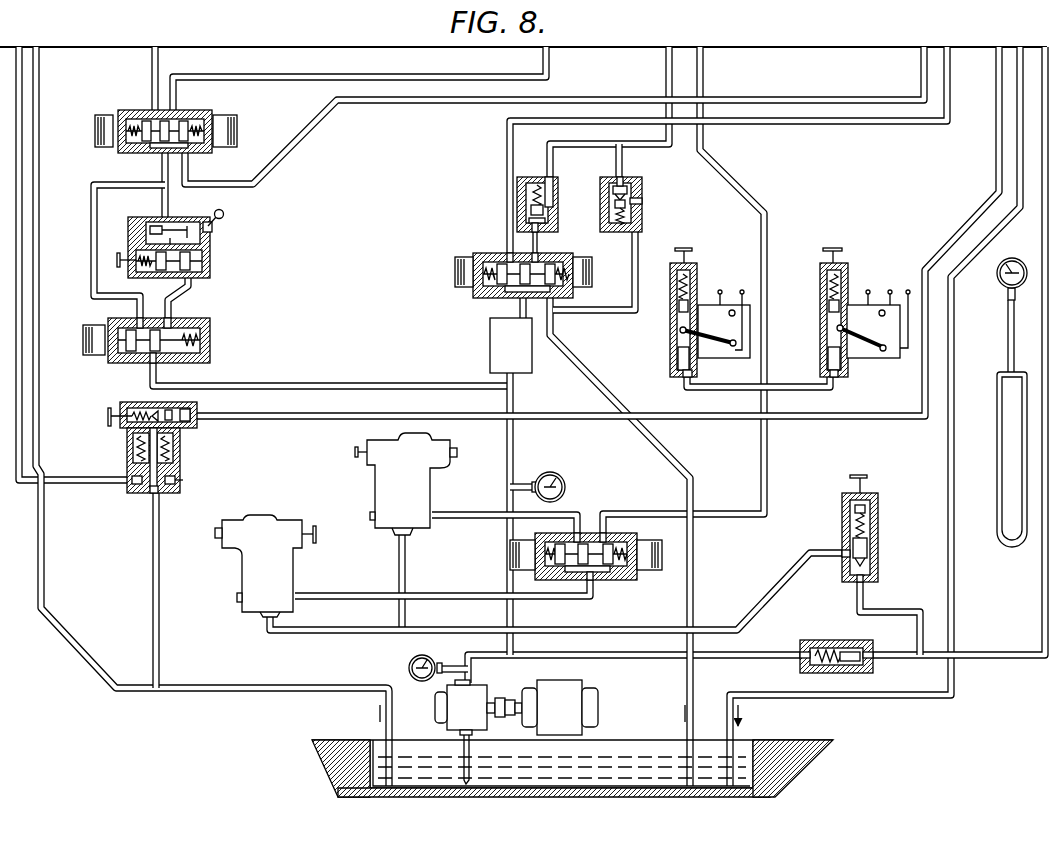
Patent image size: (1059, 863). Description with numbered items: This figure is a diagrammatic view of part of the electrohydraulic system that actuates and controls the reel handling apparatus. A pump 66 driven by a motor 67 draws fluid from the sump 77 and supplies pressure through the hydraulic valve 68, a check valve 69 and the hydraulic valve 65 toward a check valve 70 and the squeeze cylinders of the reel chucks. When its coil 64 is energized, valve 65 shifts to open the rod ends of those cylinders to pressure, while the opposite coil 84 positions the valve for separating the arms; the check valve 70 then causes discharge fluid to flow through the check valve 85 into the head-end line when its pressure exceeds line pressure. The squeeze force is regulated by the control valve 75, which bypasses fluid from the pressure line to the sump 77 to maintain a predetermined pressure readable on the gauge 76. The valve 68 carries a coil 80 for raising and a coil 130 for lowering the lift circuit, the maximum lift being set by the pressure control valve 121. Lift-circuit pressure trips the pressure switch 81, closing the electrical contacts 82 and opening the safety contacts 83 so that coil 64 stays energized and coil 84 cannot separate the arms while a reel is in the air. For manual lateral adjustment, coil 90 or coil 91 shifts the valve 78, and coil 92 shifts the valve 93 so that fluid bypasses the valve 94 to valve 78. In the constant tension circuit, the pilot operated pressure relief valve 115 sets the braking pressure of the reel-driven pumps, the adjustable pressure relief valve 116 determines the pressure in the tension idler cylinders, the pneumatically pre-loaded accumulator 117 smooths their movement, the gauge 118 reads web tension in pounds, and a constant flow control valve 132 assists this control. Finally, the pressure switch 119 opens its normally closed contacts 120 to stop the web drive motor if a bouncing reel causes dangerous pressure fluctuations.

The coil 64 is at (592, 280).
The hydraulic valve 65 is at (490, 251).
The pump 66 is at (476, 665).
The motor 67 is at (590, 720).
The hydraulic valve 68 is at (627, 585).
The check valve 69 is at (492, 350).
The check valve 70 is at (558, 201).
The control valve 75 is at (388, 488).
The gauge 76 is at (563, 478).
The sump 77 is at (746, 741).
The valve 78 is at (139, 107).
The coil 80 is at (652, 548).
The pressure switch 81 is at (832, 317).
The electrical contacts 82 is at (878, 310).
The contacts 83 is at (883, 351).
The coil 84 is at (456, 275).
The check valve 85 is at (643, 202).
The coil 90 is at (95, 133).
The coil 91 is at (231, 133).
The coil 92 is at (98, 350).
The valve 93 is at (214, 337).
The valve 94 is at (212, 258).
The pilot operated pressure relief valve 115 is at (180, 458).
The adjustable pressure relief valve 116 is at (878, 528).
The pneumatically pre-loaded accumulator 117 is at (1004, 460).
The gauge 118 is at (1014, 262).
The pressure switch 119 is at (708, 302).
The normally closed contacts 120 is at (732, 345).
The pressure control valve 121 is at (258, 574).
The coil 130 is at (510, 553).
The constant flow control valve 132 is at (806, 640).